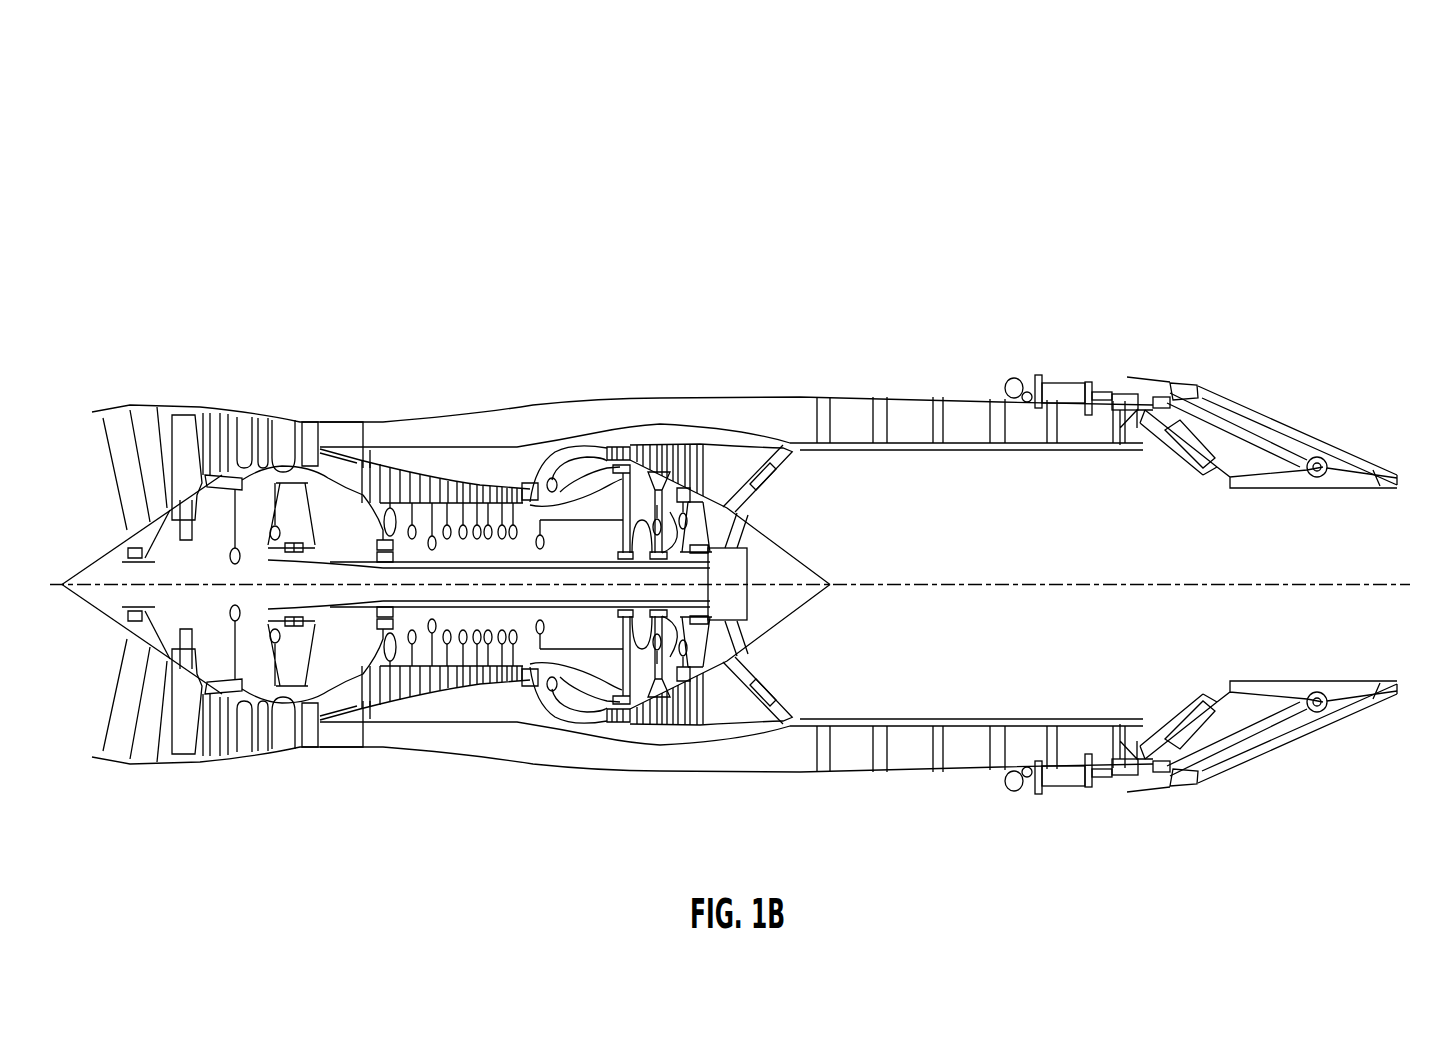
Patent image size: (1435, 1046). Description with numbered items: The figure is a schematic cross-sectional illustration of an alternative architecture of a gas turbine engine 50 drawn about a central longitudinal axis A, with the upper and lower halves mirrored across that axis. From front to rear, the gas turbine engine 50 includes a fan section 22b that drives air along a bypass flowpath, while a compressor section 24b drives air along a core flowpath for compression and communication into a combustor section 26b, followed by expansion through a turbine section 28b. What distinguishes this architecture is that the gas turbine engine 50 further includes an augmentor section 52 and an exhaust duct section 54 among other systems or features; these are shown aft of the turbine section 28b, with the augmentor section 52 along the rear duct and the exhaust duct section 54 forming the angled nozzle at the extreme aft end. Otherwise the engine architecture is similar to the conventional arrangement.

The fan section 22b is at (220, 352).
The compressor section 24b is at (420, 340).
The combustor section 26b is at (595, 354).
The turbine section 28b is at (686, 359).
The gas turbine engine 50 is at (1058, 106).
The augmentor section 52 is at (861, 266).
The exhaust duct section 54 is at (1156, 254).
The engine central longitudinal axis A is at (1317, 580).